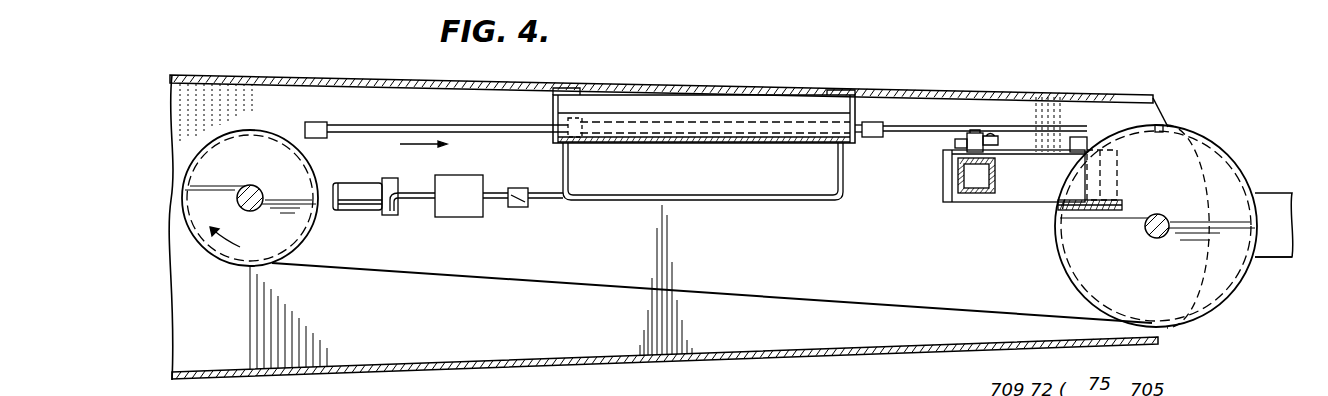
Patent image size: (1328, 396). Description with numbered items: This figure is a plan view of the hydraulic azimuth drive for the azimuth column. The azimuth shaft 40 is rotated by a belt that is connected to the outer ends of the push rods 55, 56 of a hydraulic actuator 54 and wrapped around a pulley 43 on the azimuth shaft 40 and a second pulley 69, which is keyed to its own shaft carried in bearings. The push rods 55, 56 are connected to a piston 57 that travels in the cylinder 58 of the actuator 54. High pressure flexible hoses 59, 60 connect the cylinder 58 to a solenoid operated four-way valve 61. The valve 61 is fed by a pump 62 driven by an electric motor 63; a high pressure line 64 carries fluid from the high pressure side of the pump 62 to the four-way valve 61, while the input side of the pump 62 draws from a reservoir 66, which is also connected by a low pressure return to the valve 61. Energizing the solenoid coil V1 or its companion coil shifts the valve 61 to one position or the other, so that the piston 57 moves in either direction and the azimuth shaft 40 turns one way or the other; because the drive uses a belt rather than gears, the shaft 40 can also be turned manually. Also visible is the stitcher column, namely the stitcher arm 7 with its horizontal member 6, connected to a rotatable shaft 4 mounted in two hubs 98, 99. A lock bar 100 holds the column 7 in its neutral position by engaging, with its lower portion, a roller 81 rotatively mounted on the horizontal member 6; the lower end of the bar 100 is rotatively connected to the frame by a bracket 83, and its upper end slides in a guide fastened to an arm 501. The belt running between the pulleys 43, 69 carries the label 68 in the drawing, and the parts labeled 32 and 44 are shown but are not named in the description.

The rotatable shaft 4 is at (1105, 183).
The horizontal member 6 is at (1032, 192).
The stitcher arm 7 is at (1007, 203).
The frame 32 is at (1274, 258).
The azimuth shaft 40 is at (1158, 240).
The pulley 43 is at (1222, 172).
The support block 44 is at (1280, 193).
The hydraulic actuator 54 is at (679, 115).
The push rod 55 is at (409, 104).
The push rod 56 is at (878, 121).
The piston 57 is at (576, 116).
The cylinder 58 is at (727, 145).
The high pressure flexible hose 59 is at (843, 184).
The high pressure flexible hose 60 is at (568, 170).
The four-way valve 61 is at (520, 208).
The pump 62 is at (385, 215).
The electric motor 63 is at (372, 211).
The high pressure line 64 is at (415, 193).
The reservoir 66 is at (466, 216).
The belt 68 is at (932, 125).
The pulley 69 is at (308, 180).
The roller 81 is at (978, 132).
The bracket 83 is at (999, 140).
The hub 98 is at (1097, 212).
The hub 99 is at (1085, 137).
The lock bar 100 is at (955, 143).
The arm 501 is at (995, 180).
The solenoid coil V1 is at (512, 189).